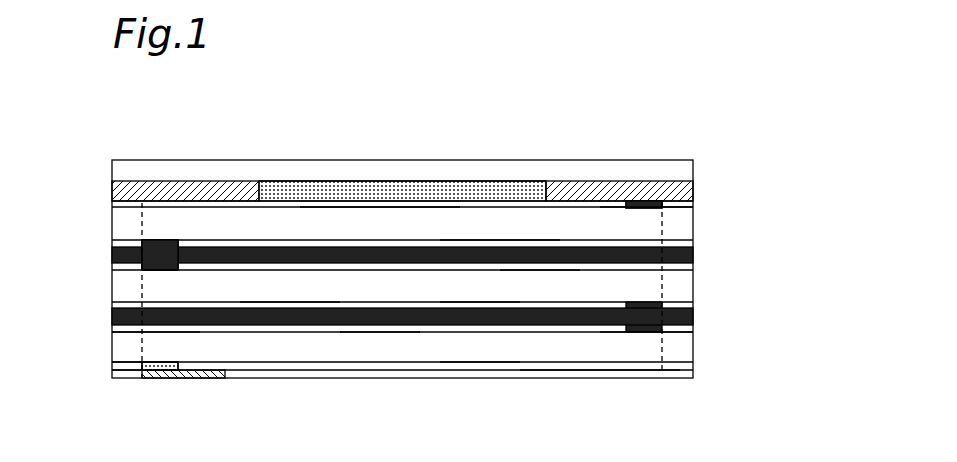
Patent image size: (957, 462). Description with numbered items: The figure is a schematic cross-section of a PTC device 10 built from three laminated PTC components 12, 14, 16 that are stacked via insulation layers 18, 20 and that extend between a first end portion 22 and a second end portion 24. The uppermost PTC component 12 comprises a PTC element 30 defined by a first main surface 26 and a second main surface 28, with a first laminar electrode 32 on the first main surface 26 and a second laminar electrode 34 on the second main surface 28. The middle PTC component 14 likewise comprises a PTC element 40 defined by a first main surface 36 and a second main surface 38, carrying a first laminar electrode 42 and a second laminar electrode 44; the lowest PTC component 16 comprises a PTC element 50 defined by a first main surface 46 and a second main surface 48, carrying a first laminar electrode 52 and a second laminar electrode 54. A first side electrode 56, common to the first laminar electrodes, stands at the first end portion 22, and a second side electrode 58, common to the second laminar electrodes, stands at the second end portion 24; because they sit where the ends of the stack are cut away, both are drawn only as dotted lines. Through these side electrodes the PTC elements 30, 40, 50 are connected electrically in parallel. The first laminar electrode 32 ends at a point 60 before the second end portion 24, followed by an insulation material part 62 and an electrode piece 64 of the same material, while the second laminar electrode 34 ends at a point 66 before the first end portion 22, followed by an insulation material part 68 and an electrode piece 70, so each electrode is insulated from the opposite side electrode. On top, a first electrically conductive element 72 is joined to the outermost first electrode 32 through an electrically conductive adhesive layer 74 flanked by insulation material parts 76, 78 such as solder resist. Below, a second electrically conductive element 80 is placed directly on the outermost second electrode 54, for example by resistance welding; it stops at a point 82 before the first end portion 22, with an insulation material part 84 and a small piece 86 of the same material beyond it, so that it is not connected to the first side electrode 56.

The PTC device 10 is at (695, 128).
The PTC component 12 is at (280, 218).
The PTC component 14 is at (293, 287).
The PTC component 16 is at (555, 348).
The insulation layer 18 is at (366, 252).
The insulation layer 20 is at (400, 317).
The first end portion 22 is at (108, 286).
The second end portion 24 is at (696, 285).
The first main surface 26 is at (436, 205).
The second main surface 28 is at (503, 232).
The PTC element 30 is at (627, 226).
The first laminar electrode 32 is at (344, 203).
The second laminar electrode 34 is at (450, 240).
The first main surface 36 is at (462, 297).
The second main surface 38 is at (537, 270).
The PTC element 40 is at (627, 288).
The first laminar electrode 42 is at (327, 298).
The second laminar electrode 44 is at (413, 270).
The first main surface 46 is at (318, 337).
The second main surface 48 is at (468, 360).
The PTC element 50 is at (617, 348).
The first laminar electrode 52 is at (364, 333).
The second laminar electrode 54 is at (412, 362).
The first side electrode 56 is at (137, 342).
The second side electrode 58 is at (663, 342).
The point 60 is at (621, 212).
The insulation material part 62 is at (642, 200).
The electrode piece 64 is at (677, 206).
The point 66 is at (181, 237).
The insulation material part 68 is at (158, 240).
The electrode piece 70 is at (127, 244).
The first electrically conductive element 72 is at (489, 168).
The electrically conductive adhesive layer 74 is at (437, 192).
The insulation material part 76 is at (188, 192).
The insulation material part 78 is at (586, 192).
The second electrically conductive element 80 is at (442, 373).
The point 82 is at (220, 389).
The insulation material part 84 is at (178, 372).
The small piece 86 is at (125, 377).